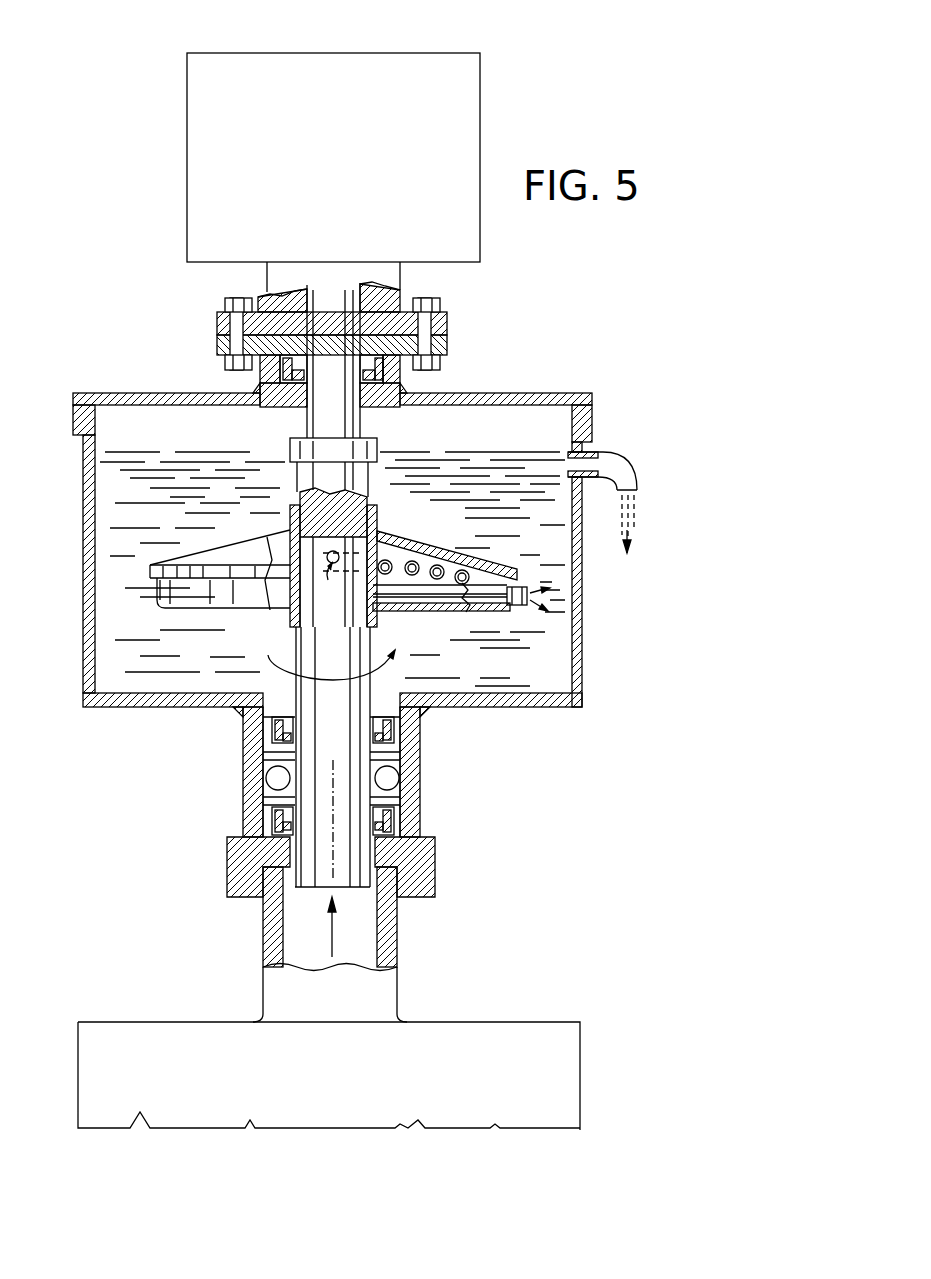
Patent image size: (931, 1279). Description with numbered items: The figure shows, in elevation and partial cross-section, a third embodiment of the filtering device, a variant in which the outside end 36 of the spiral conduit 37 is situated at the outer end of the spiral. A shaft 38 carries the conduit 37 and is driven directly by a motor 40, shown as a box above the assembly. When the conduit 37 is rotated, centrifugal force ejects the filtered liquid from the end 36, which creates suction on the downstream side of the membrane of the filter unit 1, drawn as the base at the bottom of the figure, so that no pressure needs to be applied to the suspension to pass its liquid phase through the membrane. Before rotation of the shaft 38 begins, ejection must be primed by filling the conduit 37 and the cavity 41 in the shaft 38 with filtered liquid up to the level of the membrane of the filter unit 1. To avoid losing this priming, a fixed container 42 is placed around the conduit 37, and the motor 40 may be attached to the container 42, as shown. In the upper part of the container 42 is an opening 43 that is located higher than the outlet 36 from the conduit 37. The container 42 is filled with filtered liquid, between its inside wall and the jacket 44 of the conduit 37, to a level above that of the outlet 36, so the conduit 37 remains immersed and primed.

The filter unit 1 is at (517, 1053).
The outside end 36 is at (527, 597).
The spiral conduit 37 is at (460, 570).
The shaft 38 is at (323, 477).
The motor 40 is at (233, 168).
The cavity 41 is at (307, 597).
The fixed container 42 is at (170, 699).
The opening 43 is at (612, 462).
The jacket 44 is at (231, 548).